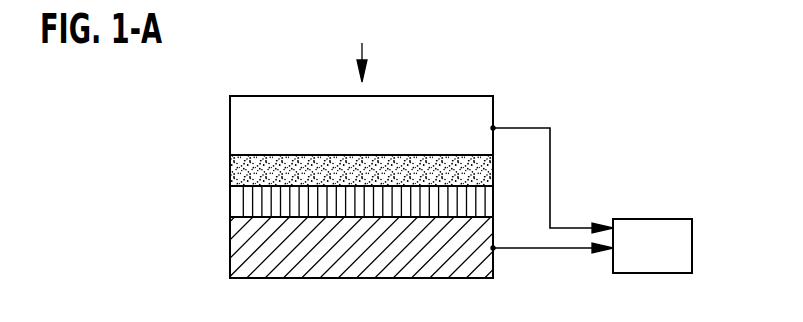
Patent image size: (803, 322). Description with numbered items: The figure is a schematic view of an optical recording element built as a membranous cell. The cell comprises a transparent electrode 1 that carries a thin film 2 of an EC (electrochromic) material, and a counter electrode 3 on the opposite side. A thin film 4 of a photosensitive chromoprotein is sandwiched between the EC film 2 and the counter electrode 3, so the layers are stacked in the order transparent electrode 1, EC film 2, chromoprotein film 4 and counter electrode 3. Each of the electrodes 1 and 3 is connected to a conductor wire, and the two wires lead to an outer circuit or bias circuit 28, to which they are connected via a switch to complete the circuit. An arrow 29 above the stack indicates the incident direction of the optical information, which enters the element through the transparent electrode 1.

The transparent electrode 1 is at (243, 128).
The thin film of an EC material 2 is at (242, 172).
The counter electrode 3 is at (235, 247).
The thin film of a photosensitive chromoprotein 4 is at (239, 200).
The bias circuit 28 is at (657, 218).
The arrow 29 is at (360, 45).